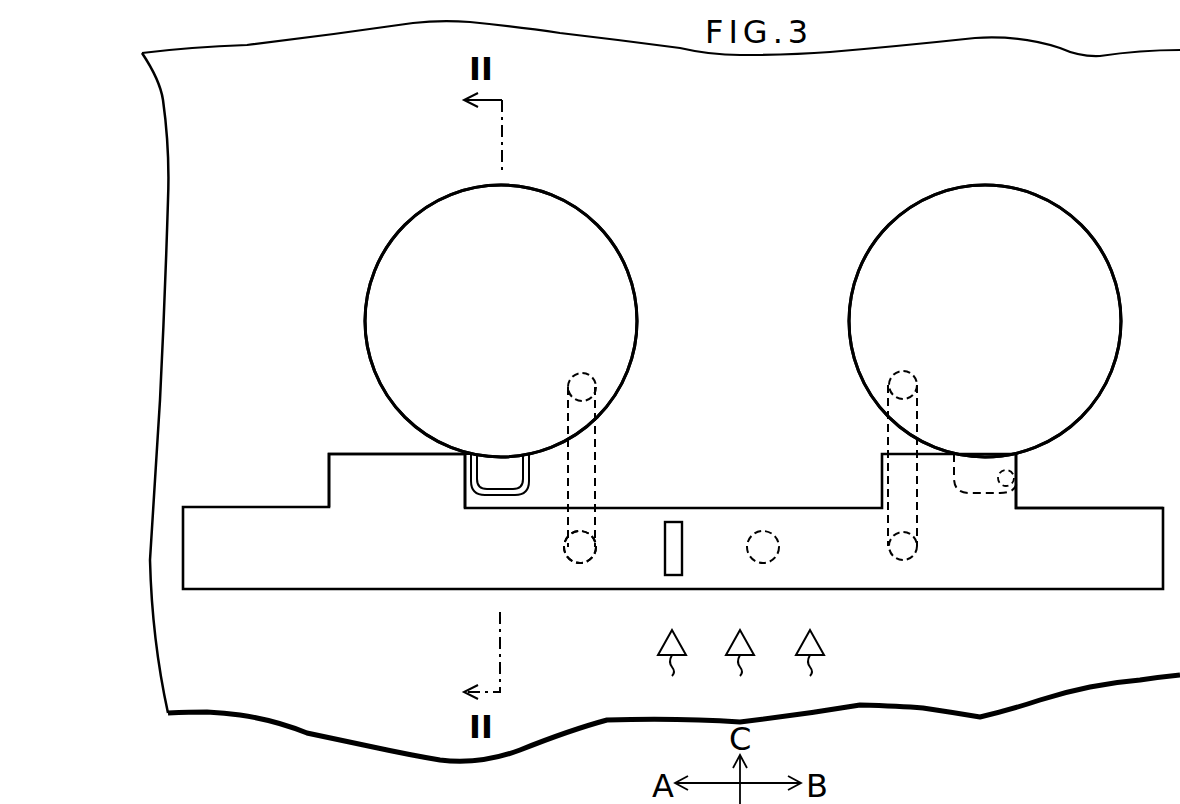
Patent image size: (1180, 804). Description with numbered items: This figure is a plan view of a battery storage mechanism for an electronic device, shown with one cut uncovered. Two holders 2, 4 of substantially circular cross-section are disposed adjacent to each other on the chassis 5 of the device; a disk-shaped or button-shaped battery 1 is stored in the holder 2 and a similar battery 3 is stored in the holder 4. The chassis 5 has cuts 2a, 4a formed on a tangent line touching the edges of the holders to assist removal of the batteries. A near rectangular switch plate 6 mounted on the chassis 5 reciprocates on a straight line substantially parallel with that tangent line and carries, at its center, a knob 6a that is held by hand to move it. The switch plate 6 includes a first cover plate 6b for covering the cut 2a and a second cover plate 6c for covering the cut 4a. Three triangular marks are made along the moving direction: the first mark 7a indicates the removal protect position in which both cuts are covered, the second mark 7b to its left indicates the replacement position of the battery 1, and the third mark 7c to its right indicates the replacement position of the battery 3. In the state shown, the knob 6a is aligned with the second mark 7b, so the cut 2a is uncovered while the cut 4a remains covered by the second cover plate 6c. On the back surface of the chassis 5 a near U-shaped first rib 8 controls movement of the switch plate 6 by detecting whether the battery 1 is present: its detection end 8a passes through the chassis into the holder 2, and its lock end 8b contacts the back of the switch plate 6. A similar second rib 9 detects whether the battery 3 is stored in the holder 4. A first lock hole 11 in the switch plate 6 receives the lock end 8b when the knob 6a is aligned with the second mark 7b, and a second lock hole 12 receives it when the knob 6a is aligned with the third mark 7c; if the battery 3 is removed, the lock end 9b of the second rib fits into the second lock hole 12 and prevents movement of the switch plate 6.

The battery 1 is at (550, 217).
The holder 2 is at (606, 224).
The cut 2a is at (520, 487).
The battery 3 is at (987, 200).
The holder 4 is at (1074, 218).
The cut 4a is at (1020, 486).
The chassis 5 is at (185, 130).
The switch plate 6 is at (320, 570).
The knob 6a is at (673, 522).
The first cover plate 6b is at (349, 480).
The second cover plate 6c is at (1000, 510).
The first mark 7a is at (737, 670).
The second mark 7b is at (670, 670).
The third mark 7c is at (804, 670).
The first rib 8 is at (592, 457).
The detection end 8a is at (596, 381).
The lock end 8b is at (568, 562).
The second rib 9 is at (900, 440).
The lock end 9b is at (910, 558).
The first lock hole 11 is at (591, 562).
The second lock hole 12 is at (775, 560).